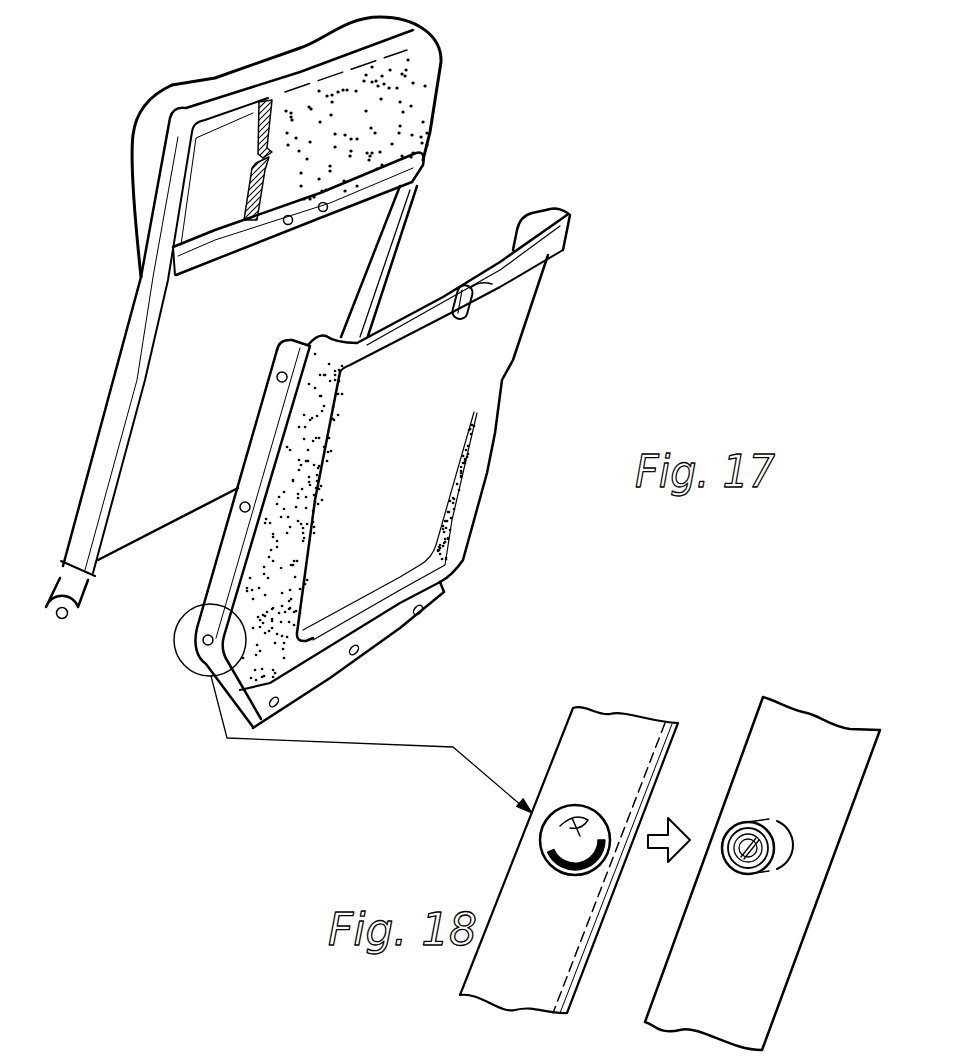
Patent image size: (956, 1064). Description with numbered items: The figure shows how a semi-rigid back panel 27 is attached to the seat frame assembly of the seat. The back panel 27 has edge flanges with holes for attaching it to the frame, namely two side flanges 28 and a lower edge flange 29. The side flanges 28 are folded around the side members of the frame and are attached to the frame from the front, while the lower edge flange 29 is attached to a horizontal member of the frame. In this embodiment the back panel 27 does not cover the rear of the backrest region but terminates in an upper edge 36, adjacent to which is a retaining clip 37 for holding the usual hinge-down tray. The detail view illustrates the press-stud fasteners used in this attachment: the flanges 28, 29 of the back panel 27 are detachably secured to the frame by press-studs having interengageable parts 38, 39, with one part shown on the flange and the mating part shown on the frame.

In FIG. 17, the semi-rigid back panel 27 is at (487, 381).
In FIG. 17, the side flange 28 is at (265, 432).
In FIG. 17, the lower edge flange 29 is at (400, 623).
In FIG. 17, the upper edge 36 is at (483, 271).
In FIG. 17, the retaining clip 37 is at (457, 319).
In FIG. 18, the press-stud interengageable part 38 is at (768, 815).
In FIG. 18, the press-stud interengageable part 39 is at (577, 817).